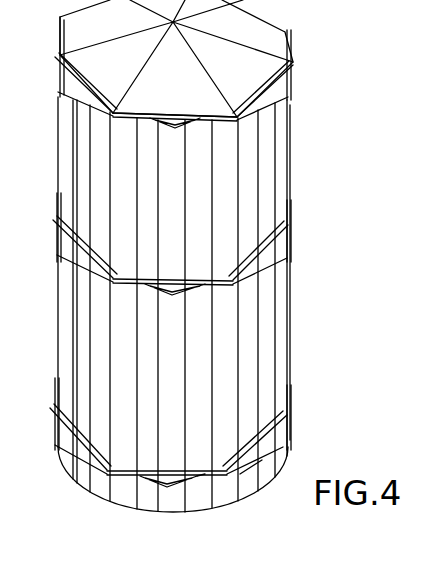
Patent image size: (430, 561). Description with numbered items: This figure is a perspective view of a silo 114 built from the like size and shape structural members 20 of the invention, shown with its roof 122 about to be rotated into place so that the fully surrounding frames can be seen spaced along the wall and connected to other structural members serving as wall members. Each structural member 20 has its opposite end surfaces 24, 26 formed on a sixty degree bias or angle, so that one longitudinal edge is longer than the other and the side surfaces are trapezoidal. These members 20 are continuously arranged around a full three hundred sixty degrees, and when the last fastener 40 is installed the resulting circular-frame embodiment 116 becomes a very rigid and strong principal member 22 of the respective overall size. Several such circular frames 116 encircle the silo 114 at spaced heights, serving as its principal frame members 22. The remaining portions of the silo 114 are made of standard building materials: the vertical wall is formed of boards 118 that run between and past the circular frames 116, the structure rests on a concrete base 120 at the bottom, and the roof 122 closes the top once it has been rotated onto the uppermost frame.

The structural member 20 is at (292, 243).
The principal member 22 is at (246, 472).
The end surface 24 is at (285, 255).
The end surface 26 is at (293, 70).
The fastener 40 is at (204, 480).
The silo 114 is at (286, 332).
The circular-frame embodiment 116 is at (293, 104).
The boards 118 is at (267, 172).
The concrete base 120 is at (145, 512).
The roof 122 is at (285, 55).